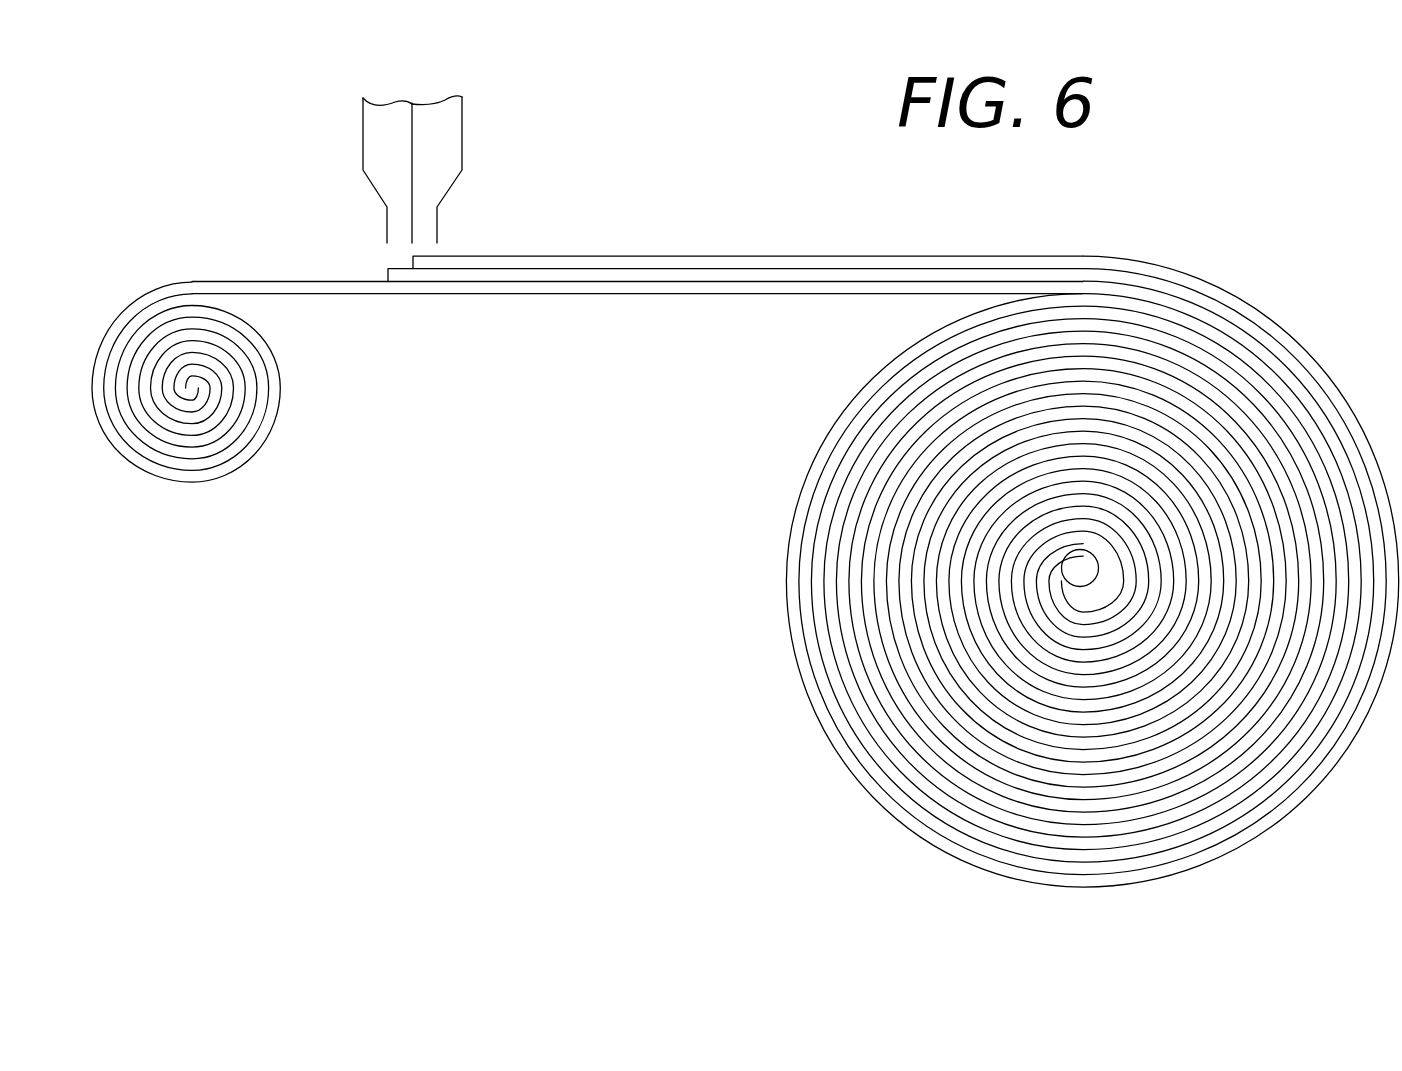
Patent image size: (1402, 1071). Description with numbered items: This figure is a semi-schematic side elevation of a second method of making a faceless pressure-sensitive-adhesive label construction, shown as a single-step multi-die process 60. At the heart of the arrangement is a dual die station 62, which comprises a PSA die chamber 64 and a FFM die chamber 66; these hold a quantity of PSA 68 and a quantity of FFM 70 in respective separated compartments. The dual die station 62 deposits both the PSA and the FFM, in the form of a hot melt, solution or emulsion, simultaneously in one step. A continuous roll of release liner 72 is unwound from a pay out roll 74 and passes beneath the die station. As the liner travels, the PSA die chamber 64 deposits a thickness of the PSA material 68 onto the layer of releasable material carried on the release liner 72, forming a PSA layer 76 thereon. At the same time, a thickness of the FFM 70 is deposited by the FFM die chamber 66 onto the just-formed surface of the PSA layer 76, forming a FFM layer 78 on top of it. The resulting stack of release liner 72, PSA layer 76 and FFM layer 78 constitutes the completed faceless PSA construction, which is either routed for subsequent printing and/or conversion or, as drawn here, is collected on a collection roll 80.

The single-step multi-die process 60 is at (620, 108).
The dual die station 62 is at (338, 116).
The PSA die chamber 64 is at (402, 233).
The FFM die chamber 66 is at (427, 232).
The PSA 68 is at (392, 158).
The FFM 70 is at (432, 137).
The release liner 72 is at (628, 290).
The pay out roll 74 is at (230, 452).
The PSA layer 76 is at (540, 272).
The FFM layer 78 is at (723, 263).
The collection roll 80 is at (823, 622).